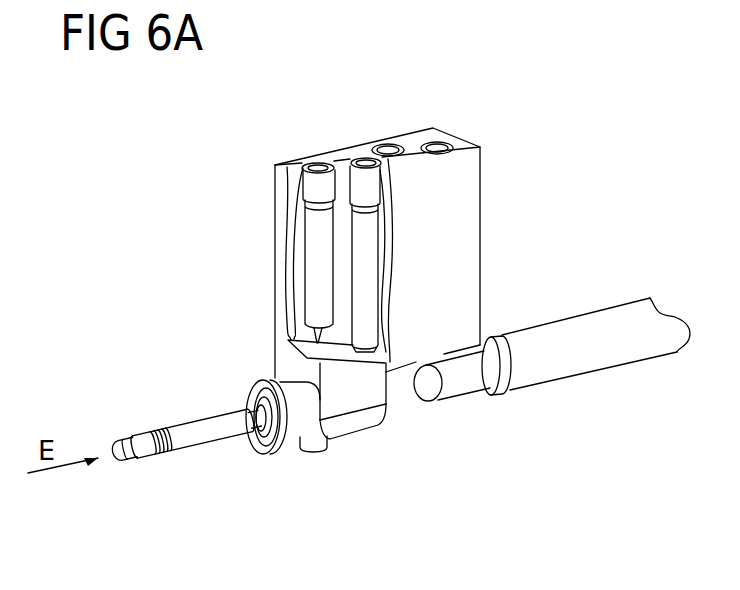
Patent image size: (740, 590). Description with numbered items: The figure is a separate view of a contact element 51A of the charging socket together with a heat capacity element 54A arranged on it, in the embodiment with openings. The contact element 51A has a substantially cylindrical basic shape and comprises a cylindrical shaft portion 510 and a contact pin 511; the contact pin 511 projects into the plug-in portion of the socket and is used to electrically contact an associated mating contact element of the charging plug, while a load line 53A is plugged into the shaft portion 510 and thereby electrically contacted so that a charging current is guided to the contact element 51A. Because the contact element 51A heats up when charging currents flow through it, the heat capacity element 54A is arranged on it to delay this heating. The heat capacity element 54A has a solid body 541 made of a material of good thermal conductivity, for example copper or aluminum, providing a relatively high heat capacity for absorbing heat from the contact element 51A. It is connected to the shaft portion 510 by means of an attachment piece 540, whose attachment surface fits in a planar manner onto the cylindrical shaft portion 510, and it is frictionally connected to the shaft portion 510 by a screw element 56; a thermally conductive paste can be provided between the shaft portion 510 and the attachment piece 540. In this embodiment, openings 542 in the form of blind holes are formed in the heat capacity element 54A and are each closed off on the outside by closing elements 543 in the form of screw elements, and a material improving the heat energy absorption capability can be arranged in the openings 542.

The heat capacity element 54A is at (468, 188).
The solid body 541 is at (468, 262).
The closing elements 543 is at (437, 143).
The openings 542 is at (322, 283).
The attachment piece 540 is at (368, 398).
The shaft portion 510 is at (318, 427).
The screw element 56 is at (310, 447).
The contact pin 511 is at (193, 432).
The contact element 51A is at (190, 458).
The load line 53A is at (590, 363).